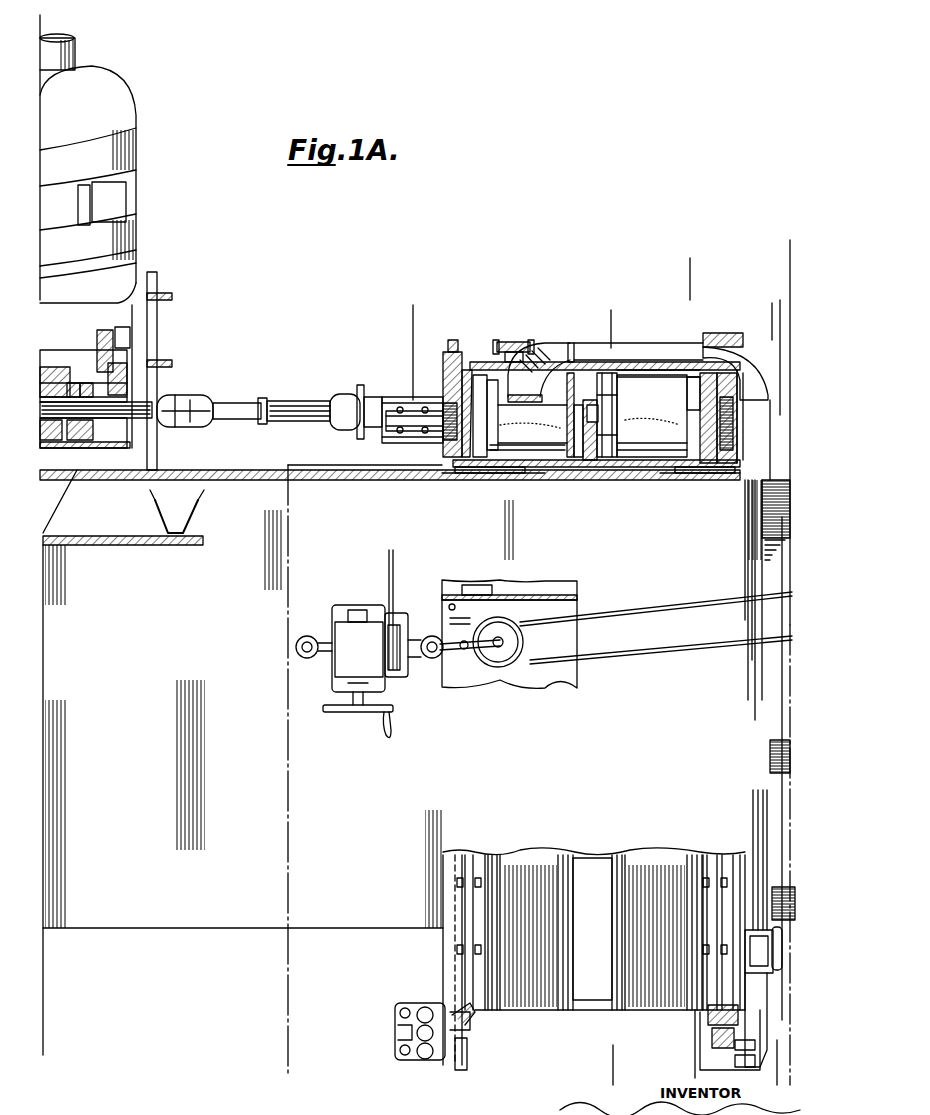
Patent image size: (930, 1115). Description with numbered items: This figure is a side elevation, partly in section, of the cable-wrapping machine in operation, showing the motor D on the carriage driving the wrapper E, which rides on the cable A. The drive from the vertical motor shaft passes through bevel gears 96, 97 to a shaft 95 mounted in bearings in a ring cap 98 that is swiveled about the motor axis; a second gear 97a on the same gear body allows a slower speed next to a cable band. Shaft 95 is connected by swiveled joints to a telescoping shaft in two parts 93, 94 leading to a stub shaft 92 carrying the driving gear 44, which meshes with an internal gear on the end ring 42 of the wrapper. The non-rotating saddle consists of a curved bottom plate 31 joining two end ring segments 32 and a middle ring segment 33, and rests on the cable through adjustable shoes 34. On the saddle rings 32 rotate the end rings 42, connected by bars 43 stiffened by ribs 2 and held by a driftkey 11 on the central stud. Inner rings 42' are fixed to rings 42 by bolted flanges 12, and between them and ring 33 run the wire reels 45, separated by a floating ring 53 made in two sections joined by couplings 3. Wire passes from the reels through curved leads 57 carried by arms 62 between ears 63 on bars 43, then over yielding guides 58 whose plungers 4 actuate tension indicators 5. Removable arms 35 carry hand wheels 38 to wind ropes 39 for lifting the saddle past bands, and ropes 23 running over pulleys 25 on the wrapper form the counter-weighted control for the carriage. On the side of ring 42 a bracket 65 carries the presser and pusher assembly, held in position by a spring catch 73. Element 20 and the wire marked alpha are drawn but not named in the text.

The motor D is at (105, 108).
The direction arrow 20 is at (240, 312).
The bevel gear 97 is at (60, 370).
The gear 97a is at (115, 352).
The ring cap 98 is at (128, 378).
The telescoping shaft part 93 is at (287, 405).
The telescoping shaft part 94 is at (243, 418).
The shaft 95 is at (118, 413).
The bevel gear 96 is at (70, 450).
The stub shaft 92 is at (392, 440).
The driving gear 44 is at (440, 437).
The driftkey 11 is at (446, 352).
The end ring 42 is at (567, 685).
The ring 42' is at (591, 697).
The ears 63 is at (496, 340).
The arm 62 is at (516, 340).
The curved lead 57 is at (545, 360).
The wrapper E is at (569, 345).
The wire reel 45 is at (575, 412).
The floating ring 53 is at (622, 400).
The bar 43 is at (645, 368).
The curved yielding guide 58 is at (745, 385).
The curved bottom plate 31 is at (565, 440).
The middle ring segment 33 is at (585, 460).
The end ring segment 32 is at (462, 470).
The shoe 34 is at (478, 476).
The rib 2 is at (404, 326).
The coupling 3 is at (682, 274).
The indicator plunger 4 is at (620, 326).
The indicator 5 is at (787, 322).
The rope 39 is at (396, 580).
The removable arm 35 is at (428, 665).
The hand wheel 38 is at (372, 712).
The pulley 25 is at (512, 662).
The rope 23 is at (695, 650).
The bolted flange 12 is at (473, 972).
The bracket 65 is at (435, 1060).
The spring catch 73 is at (462, 1068).
The cable A is at (252, 882).